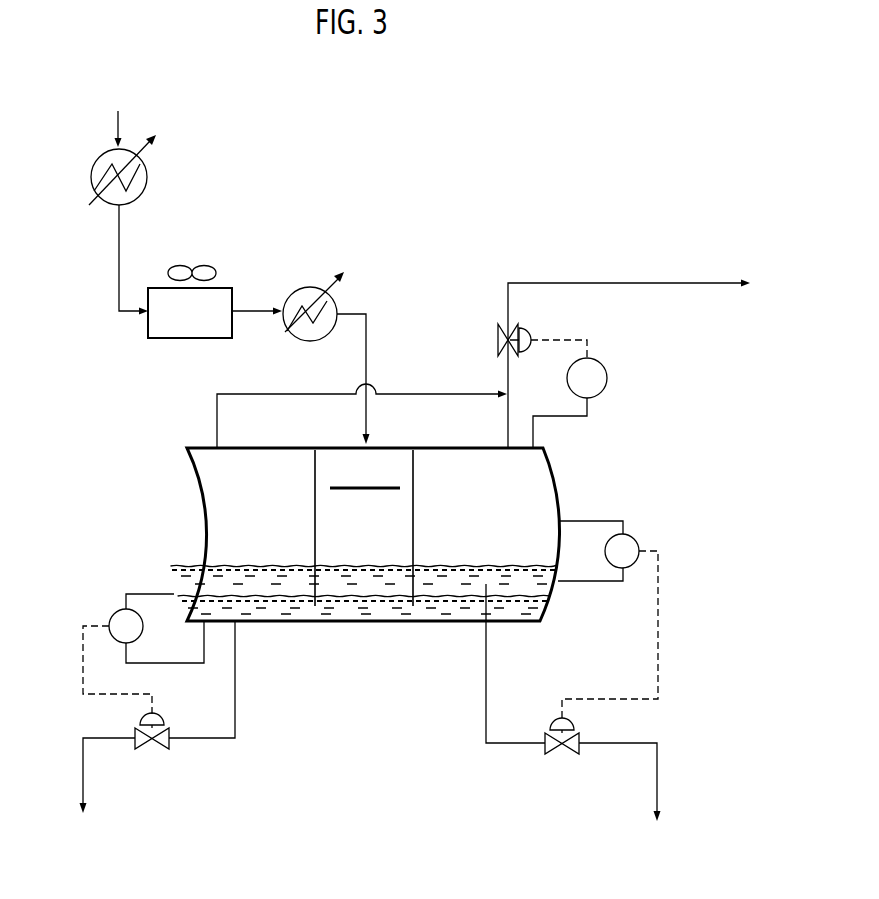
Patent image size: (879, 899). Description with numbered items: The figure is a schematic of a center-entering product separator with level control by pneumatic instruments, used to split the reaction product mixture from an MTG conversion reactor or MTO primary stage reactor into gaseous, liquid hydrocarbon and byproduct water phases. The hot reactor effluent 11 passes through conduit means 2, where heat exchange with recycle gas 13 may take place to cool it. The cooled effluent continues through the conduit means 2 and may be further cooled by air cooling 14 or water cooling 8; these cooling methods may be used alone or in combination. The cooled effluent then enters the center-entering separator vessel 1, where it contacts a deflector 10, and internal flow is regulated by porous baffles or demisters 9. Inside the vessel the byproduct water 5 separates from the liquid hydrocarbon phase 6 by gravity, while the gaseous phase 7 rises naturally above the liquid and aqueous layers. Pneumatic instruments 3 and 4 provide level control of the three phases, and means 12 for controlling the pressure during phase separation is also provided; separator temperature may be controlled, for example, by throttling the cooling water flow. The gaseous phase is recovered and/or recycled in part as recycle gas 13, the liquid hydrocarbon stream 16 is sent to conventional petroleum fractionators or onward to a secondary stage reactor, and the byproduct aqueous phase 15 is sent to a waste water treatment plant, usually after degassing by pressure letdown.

The center-entering separator vessel 1 is at (158, 523).
The conduit means 2 is at (368, 362).
The pneumatic instrument 3 is at (633, 537).
The pneumatic instrument 4 is at (112, 612).
The byproduct water 5 is at (277, 605).
The liquid hydrocarbon phase 6 is at (467, 578).
The gaseous phase 7 is at (462, 492).
The water cooling 8 is at (285, 329).
The porous baffles or demisters 9 is at (412, 586).
The deflector 10 is at (350, 486).
The hot reactor effluent 11 is at (110, 105).
The means for controlling the pressure 12 is at (607, 380).
The recycle gas 13 is at (89, 204).
The air cooling 14 is at (148, 330).
The byproduct aqueous phase 15 is at (131, 744).
The liquid hydrocarbon stream 16 is at (603, 727).